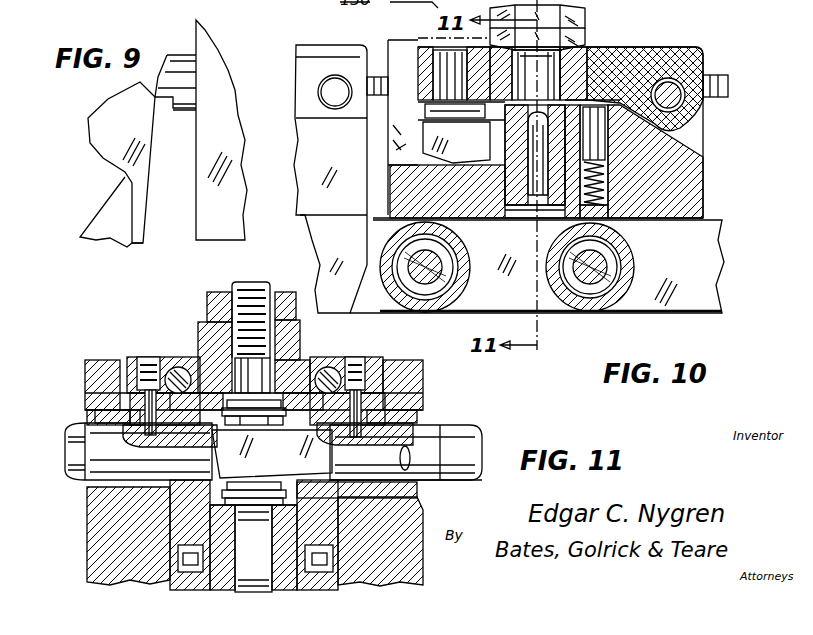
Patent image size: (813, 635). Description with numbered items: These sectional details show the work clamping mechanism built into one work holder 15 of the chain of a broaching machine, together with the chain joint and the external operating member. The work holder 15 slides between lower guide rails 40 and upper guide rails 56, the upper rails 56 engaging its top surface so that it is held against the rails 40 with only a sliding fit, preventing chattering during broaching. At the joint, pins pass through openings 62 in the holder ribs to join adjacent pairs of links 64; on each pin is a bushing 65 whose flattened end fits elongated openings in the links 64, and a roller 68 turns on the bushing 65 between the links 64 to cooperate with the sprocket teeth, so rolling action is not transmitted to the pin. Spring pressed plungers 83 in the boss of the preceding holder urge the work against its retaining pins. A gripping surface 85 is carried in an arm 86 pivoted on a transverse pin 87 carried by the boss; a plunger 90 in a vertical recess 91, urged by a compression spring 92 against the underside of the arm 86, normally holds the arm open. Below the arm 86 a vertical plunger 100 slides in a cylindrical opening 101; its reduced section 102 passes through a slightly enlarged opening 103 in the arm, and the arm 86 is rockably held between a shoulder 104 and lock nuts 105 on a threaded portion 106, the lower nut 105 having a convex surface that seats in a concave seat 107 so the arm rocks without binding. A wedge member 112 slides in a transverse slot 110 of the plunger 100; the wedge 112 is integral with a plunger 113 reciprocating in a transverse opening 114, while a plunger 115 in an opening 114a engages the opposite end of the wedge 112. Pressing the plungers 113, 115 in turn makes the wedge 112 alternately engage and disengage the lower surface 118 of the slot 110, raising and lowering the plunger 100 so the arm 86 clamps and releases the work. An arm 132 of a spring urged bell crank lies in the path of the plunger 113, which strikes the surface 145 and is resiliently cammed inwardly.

In FIG. 9, the work holder 15 is at (227, 202).
In FIG. 10, the work holder 15 is at (325, 348).
In FIG. 11, the work holder 15 is at (320, 366).
In FIG. 11, the lower guide rails 40 is at (92, 548).
In FIG. 11, the guide rails 56 is at (83, 373).
In FIG. 10, the openings 62 is at (435, 272).
In FIG. 10, the links 64 is at (708, 303).
In FIG. 11, the links 64 is at (228, 540).
In FIG. 10, the bushing 65 is at (445, 288).
In FIG. 10, the roller 68 is at (450, 300).
In FIG. 11, the roller 68 is at (253, 548).
In FIG. 10, the plungers 83 is at (705, 98).
In FIG. 10, the gripping surface 85 is at (415, 100).
In FIG. 10, the clamp arm 86 is at (702, 62).
In FIG. 10, the pin 87 is at (720, 80).
In FIG. 10, the plunger 90 is at (597, 155).
In FIG. 10, the recess 91 is at (598, 135).
In FIG. 10, the compression spring 92 is at (673, 176).
In FIG. 10, the plunger 100 is at (517, 220).
In FIG. 10, the cylindrical opening 101 is at (521, 236).
In FIG. 10, the reduced section 102 is at (613, 55).
In FIG. 10, the opening 103 is at (565, 90).
In FIG. 10, the shoulder 104 is at (618, 63).
In FIG. 10, the lock nuts 105 is at (585, 24).
In FIG. 11, the lock nuts 105 is at (207, 308).
In FIG. 11, the threaded portion 106 is at (247, 283).
In FIG. 10, the concave seat 107 is at (585, 45).
In FIG. 10, the transverse slot 110 is at (528, 118).
In FIG. 10, the wedge member 112 is at (540, 175).
In FIG. 11, the wedge member 112 is at (272, 454).
In FIG. 9, the plunger 113 is at (178, 115).
In FIG. 11, the plunger 113 is at (141, 445).
In FIG. 11, the transverse opening 114 is at (80, 423).
In FIG. 11, the opening 114a is at (415, 480).
In FIG. 11, the plunger 115 is at (442, 432).
In FIG. 10, the lower surface 118 is at (520, 264).
In FIG. 9, the arm 132 is at (140, 200).
In FIG. 9, the surface 145 is at (137, 247).